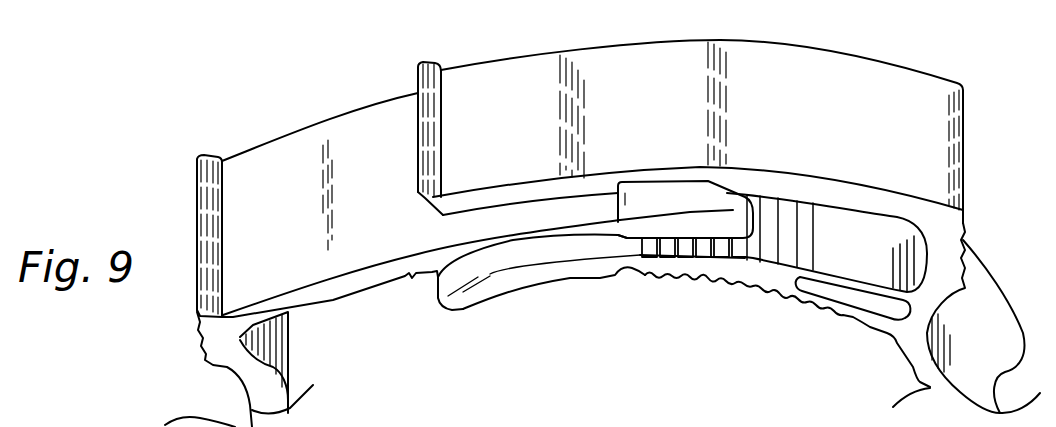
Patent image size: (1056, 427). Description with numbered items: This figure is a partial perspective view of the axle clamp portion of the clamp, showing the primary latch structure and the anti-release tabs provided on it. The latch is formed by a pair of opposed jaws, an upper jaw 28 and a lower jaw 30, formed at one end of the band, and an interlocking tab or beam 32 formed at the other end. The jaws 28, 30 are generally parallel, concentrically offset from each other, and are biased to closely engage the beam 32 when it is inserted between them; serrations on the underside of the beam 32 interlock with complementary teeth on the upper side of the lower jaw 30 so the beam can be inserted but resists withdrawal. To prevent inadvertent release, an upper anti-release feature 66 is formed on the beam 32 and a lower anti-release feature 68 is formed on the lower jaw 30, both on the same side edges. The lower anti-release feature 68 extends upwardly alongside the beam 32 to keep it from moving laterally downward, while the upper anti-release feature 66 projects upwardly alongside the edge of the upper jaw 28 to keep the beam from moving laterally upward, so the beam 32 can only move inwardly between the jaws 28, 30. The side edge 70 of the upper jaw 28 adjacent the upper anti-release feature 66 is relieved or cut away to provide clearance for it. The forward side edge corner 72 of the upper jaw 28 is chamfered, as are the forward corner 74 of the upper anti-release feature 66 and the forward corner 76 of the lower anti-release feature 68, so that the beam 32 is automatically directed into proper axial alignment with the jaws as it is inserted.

The upper jaw 28 is at (900, 113).
The lower jaw 30 is at (753, 273).
The interlocking tab or beam 32 is at (347, 277).
The upper anti-release feature 66 is at (678, 227).
The lower anti-release feature 68 is at (542, 272).
The side edge of the upper jaw 70 is at (898, 207).
The forward side edge corner of the upper jaw 72 is at (435, 197).
The forward corner of the upper anti-release feature 74 is at (723, 200).
The forward corner of the lower anti-release feature 76 is at (438, 312).